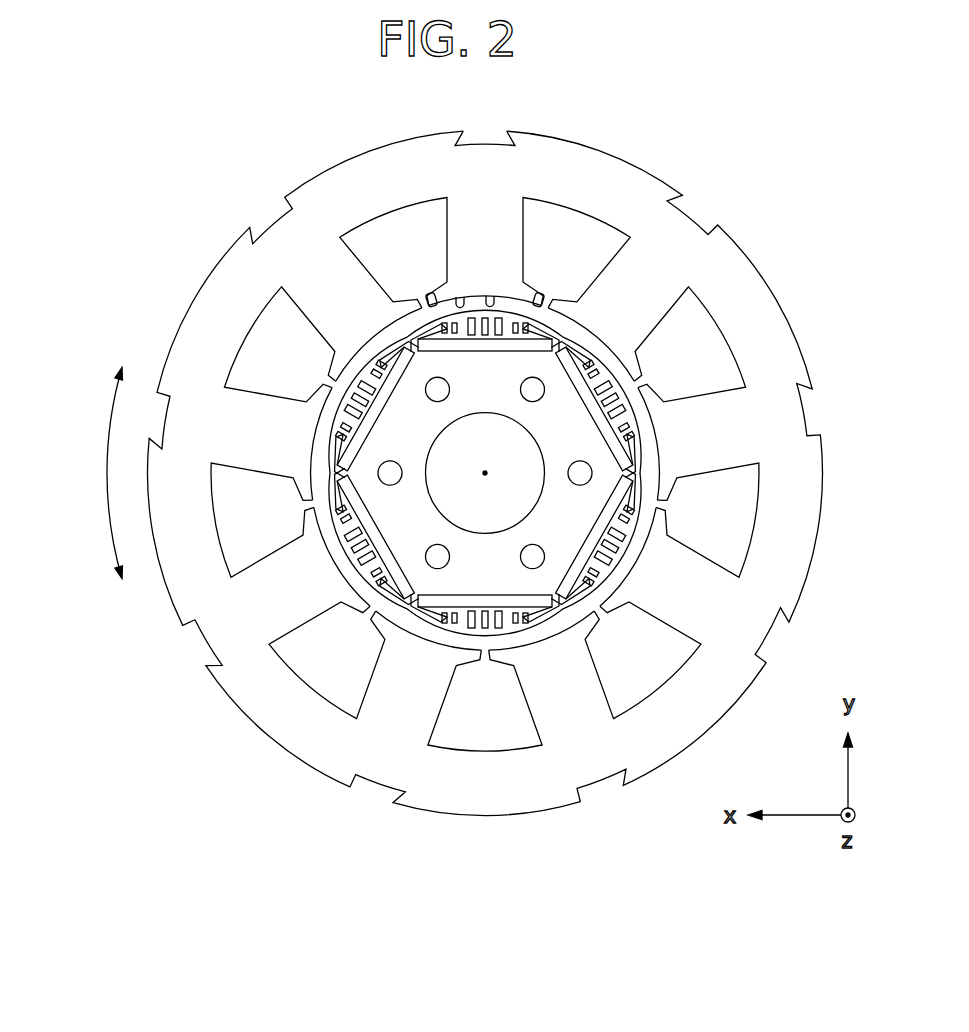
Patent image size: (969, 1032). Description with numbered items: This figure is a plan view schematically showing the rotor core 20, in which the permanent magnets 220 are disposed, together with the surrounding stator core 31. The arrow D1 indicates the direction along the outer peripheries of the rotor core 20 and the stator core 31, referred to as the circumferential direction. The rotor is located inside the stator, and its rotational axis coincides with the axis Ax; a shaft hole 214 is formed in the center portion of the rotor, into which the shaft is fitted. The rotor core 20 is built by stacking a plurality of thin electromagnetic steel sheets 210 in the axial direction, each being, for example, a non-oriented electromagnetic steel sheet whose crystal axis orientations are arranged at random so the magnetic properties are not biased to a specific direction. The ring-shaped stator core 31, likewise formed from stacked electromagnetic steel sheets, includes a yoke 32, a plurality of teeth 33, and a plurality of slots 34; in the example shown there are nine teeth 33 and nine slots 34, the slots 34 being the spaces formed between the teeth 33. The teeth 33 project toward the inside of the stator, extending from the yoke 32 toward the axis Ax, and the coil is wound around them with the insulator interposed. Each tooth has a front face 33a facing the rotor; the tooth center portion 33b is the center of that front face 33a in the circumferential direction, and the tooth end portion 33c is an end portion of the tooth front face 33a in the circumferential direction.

The rotor core 20 is at (485, 662).
The stator core 31 is at (487, 145).
The yoke 32 is at (401, 173).
The teeth 33 is at (501, 215).
The front faces 33a is at (462, 295).
The tooth center portion 33b is at (490, 296).
The tooth end portion 33c is at (433, 292).
The slots 34 is at (397, 235).
The electromagnetic steel sheets 210 is at (586, 444).
The shaft hole 214 is at (487, 534).
The permanent magnets 220 is at (490, 352).
The axis Ax is at (484, 474).
The circumferential direction D1 is at (103, 478).